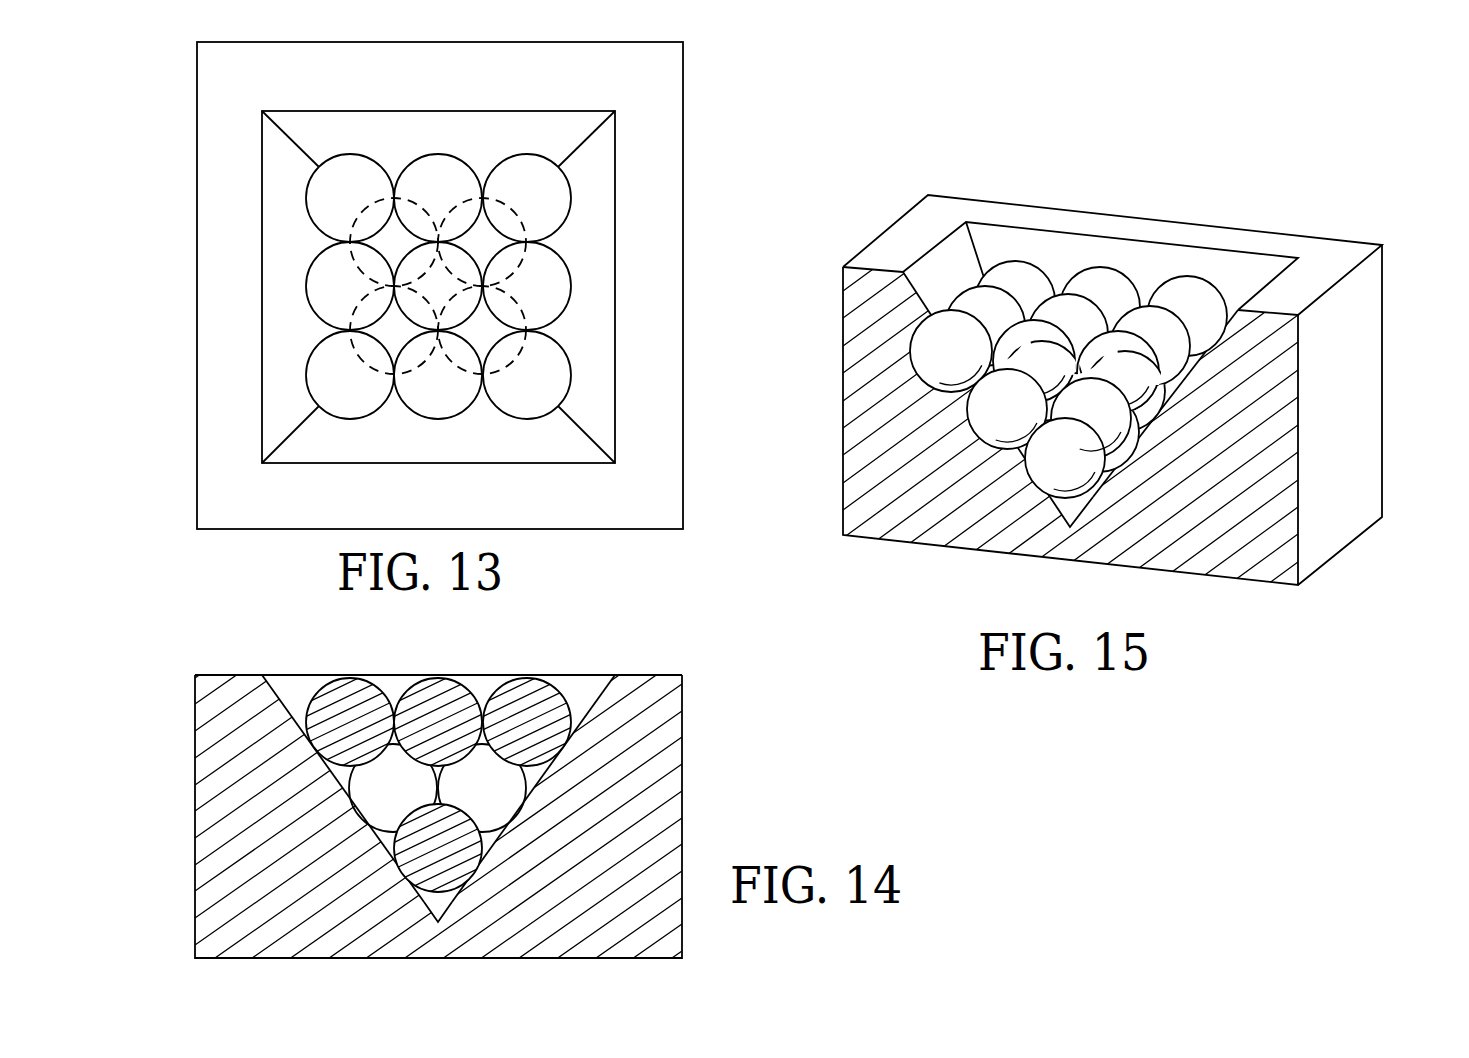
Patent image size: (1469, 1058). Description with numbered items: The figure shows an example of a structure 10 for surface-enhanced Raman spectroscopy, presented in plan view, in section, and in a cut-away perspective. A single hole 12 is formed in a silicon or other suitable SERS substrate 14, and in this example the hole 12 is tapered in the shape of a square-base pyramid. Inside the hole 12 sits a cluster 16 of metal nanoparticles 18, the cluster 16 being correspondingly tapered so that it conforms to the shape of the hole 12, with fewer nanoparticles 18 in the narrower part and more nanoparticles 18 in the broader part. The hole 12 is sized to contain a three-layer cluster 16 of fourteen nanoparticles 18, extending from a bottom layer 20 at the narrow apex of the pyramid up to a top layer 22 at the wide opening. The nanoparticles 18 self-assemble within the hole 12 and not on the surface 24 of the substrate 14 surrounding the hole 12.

In FIG. 13, the structure 10 is at (452, 285).
In FIG. 14, the structure 10 is at (484, 697).
In FIG. 15, the structure 10 is at (1139, 474).
In FIG. 13, the hole 12 is at (563, 123).
In FIG. 14, the hole 12 is at (449, 775).
In FIG. 15, the hole 12 is at (1100, 358).
In FIG. 13, the SERS substrate 14 is at (438, 285).
In FIG. 14, the SERS substrate 14 is at (463, 697).
In FIG. 15, the SERS substrate 14 is at (1139, 474).
In FIG. 13, the cluster 16 is at (484, 244).
In FIG. 14, the cluster 16 is at (431, 764).
In FIG. 15, the cluster 16 is at (1111, 337).
In FIG. 13, the metal nanoparticles 18 is at (430, 165).
In FIG. 14, the metal nanoparticles 18 is at (472, 845).
In FIG. 15, the metal nanoparticles 18 is at (1033, 473).
In FIG. 14, the bottom layer 20 is at (402, 855).
In FIG. 15, the bottom layer 20 is at (1095, 489).
In FIG. 13, the top layer 22 is at (562, 377).
In FIG. 14, the top layer 22 is at (315, 697).
In FIG. 15, the top layer 22 is at (1210, 297).
In FIG. 13, the surface 24 is at (357, 90).
In FIG. 14, the surface 24 is at (249, 675).
In FIG. 15, the surface 24 is at (927, 246).